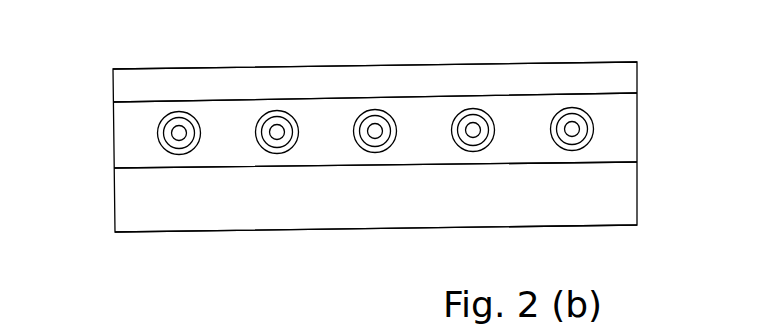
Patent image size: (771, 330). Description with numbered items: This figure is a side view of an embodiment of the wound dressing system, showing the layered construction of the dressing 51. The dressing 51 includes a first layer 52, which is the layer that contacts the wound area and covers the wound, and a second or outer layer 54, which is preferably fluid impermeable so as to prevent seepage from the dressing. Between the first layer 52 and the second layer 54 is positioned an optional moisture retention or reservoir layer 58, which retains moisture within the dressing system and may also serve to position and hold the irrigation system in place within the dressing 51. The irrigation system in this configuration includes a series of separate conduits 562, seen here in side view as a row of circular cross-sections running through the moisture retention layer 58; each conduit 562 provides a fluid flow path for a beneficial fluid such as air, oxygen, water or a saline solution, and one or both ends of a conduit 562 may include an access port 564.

The dressing 51 is at (640, 160).
The first layer 52 is at (525, 210).
The second layer 54 is at (620, 78).
The moisture retention layer 58 is at (132, 135).
The conduit 562 is at (278, 135).
The access port 564 is at (192, 152).